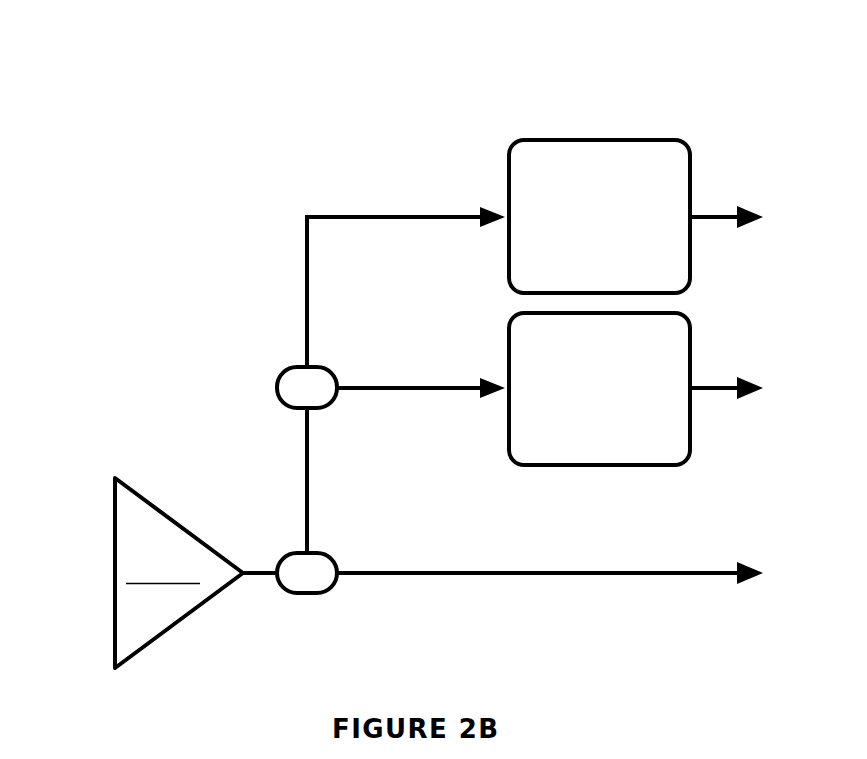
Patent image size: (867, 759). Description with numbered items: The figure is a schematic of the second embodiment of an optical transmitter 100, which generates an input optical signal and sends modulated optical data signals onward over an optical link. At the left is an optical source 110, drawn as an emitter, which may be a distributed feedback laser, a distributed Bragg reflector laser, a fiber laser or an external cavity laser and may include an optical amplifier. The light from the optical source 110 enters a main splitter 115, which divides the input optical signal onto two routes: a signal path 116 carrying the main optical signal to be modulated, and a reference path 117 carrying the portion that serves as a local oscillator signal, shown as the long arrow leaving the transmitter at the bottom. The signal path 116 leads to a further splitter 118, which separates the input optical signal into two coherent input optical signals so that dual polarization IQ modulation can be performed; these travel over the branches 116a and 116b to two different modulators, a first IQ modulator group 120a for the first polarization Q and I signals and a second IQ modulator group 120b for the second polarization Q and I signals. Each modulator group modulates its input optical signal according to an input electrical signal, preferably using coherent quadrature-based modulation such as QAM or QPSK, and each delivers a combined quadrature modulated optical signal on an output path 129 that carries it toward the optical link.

The optical transmitter 100 is at (142, 44).
The optical source 110 is at (110, 403).
The main splitter 115 is at (352, 534).
The signal path 116 is at (293, 528).
The signal path branch 116a is at (410, 349).
The signal path branch 116b is at (390, 185).
The reference path 117 is at (571, 611).
The splitter 118 is at (261, 347).
The modulator 120a is at (578, 258).
The modulator 120b is at (578, 430).
The output path 129 is at (710, 207).